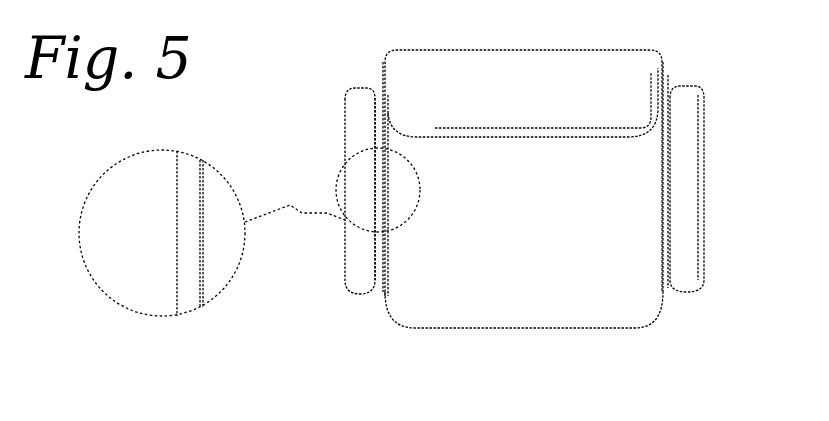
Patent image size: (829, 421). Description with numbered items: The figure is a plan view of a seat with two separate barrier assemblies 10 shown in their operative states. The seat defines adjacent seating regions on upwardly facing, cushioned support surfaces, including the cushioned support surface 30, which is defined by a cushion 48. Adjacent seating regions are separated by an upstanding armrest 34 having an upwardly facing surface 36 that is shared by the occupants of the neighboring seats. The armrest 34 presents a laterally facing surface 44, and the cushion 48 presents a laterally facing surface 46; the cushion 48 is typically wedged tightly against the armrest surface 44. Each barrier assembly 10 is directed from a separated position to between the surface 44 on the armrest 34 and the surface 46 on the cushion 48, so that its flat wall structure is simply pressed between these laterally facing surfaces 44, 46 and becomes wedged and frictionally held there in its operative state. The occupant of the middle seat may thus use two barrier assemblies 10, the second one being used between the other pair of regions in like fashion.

The barrier assembly 10 is at (668, 175).
The cushioned support surface 30 is at (548, 237).
The armrest 34 is at (366, 88).
The upwardly facing surface 36 is at (358, 232).
The surface 44 is at (180, 165).
The surface 46 is at (202, 290).
The cushion 48 is at (493, 293).